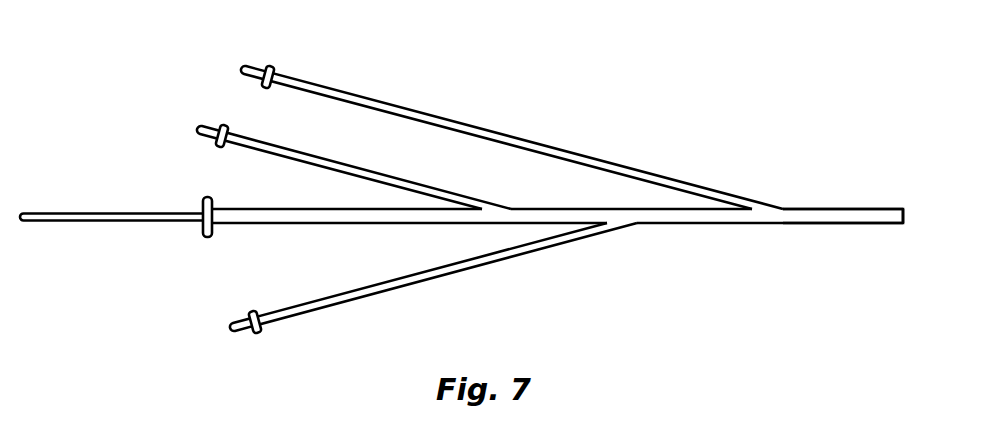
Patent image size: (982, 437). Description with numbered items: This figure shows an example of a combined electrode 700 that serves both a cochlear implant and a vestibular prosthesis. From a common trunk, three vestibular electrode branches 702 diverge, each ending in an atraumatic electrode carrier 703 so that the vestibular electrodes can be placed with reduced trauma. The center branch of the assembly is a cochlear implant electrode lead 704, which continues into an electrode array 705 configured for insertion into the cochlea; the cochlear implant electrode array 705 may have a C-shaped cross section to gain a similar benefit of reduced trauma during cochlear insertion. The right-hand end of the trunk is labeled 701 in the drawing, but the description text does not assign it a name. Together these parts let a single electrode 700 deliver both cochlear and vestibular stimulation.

The combined electrode 700 is at (650, 123).
The distal tube portion 701 is at (810, 217).
The vestibular electrode branches 702 is at (463, 125).
The atraumatic electrode carriers 703 is at (243, 67).
The cochlear implant electrode lead 704 is at (310, 217).
The electrode array 705 is at (118, 216).